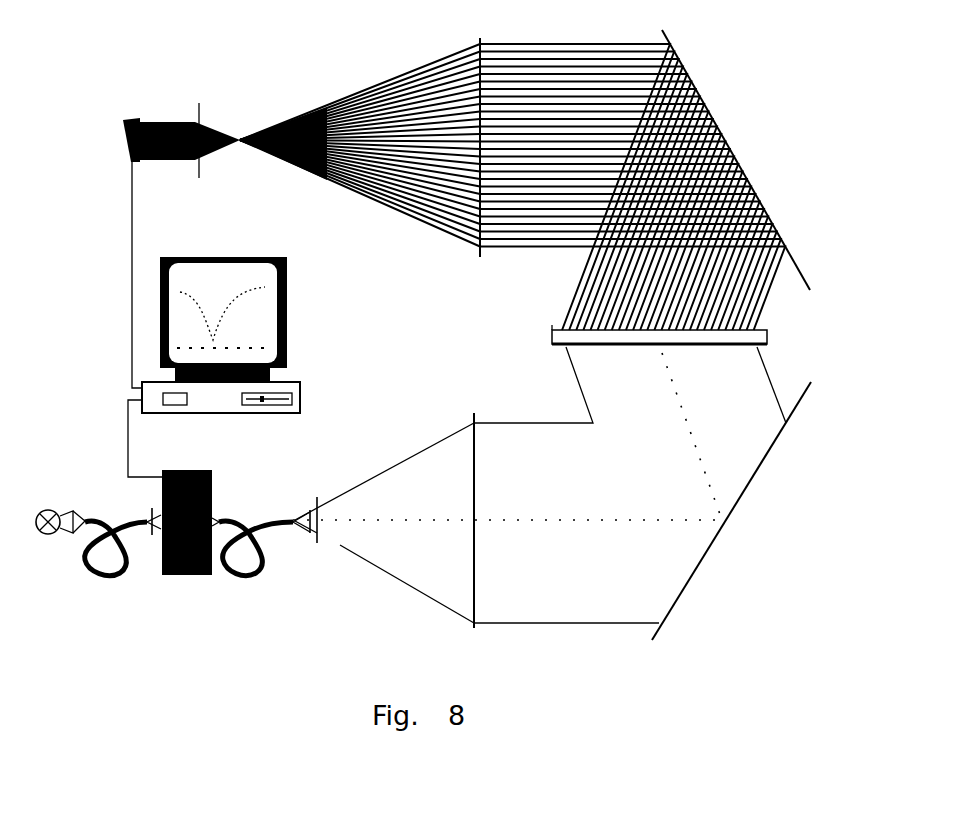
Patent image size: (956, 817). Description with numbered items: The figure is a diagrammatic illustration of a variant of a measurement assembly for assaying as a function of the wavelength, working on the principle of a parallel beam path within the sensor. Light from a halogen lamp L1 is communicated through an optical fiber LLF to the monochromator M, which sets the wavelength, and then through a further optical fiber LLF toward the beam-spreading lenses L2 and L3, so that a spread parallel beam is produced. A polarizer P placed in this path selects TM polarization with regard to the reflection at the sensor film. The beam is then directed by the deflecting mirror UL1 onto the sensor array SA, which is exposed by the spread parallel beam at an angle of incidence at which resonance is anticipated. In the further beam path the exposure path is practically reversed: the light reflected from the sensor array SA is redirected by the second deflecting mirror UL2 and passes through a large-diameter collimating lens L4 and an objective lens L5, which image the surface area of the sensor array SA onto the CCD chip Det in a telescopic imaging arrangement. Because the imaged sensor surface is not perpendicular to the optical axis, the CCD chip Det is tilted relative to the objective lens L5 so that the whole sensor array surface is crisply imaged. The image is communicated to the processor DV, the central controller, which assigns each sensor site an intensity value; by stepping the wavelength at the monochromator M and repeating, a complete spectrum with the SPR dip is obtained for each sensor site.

The light source lamp L1 is at (54, 504).
The lens L2 is at (296, 508).
The lens L3 is at (472, 503).
The large-diameter collimating lens L4 is at (466, 164).
The objective lens L5 is at (193, 126).
The polarizer P is at (315, 546).
The monochromator M is at (173, 487).
The optical fiber LLF is at (258, 582).
The CCD chip Det is at (153, 253).
The processor DV is at (236, 335).
The sensor array SA is at (763, 329).
The deflecting mirror UL1 is at (731, 511).
The deflecting mirror UL2 is at (736, 160).